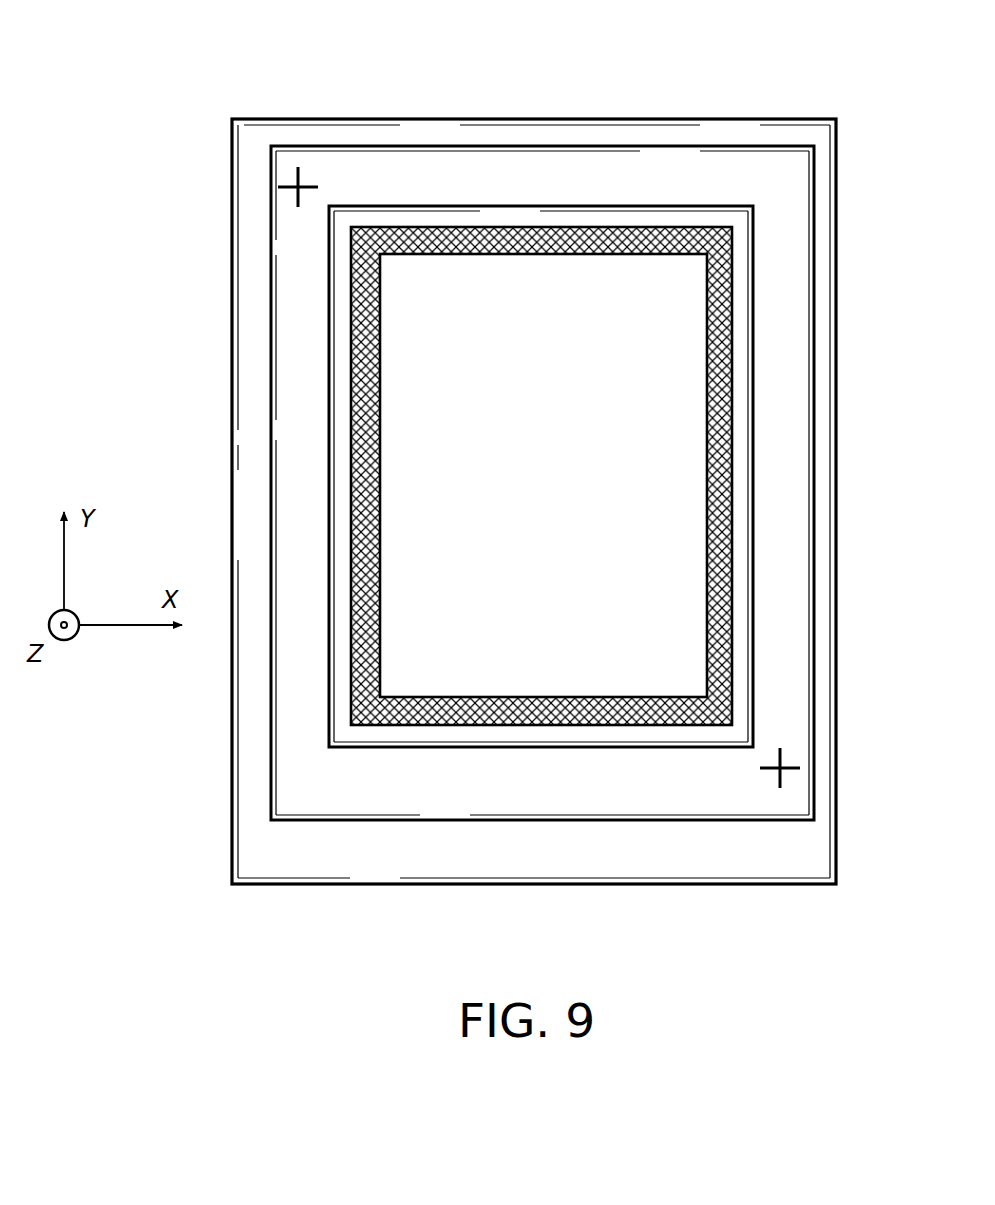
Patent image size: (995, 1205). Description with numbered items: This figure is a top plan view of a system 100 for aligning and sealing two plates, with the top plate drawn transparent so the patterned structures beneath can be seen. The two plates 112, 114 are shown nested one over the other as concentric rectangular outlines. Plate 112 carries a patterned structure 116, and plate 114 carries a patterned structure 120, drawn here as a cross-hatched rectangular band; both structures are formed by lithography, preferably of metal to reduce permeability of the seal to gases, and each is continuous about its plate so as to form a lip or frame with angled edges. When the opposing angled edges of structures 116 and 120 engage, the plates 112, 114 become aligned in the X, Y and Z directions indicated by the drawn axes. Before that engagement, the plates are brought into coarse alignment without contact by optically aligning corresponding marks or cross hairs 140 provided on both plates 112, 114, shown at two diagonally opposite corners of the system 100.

The system for aligning and sealing plates 100 is at (132, 75).
The plate 112 is at (665, 147).
The plate 114 is at (482, 127).
The patterned structure 116 is at (752, 232).
The patterned structure 120 is at (382, 417).
The cross hairs 140 is at (314, 181).